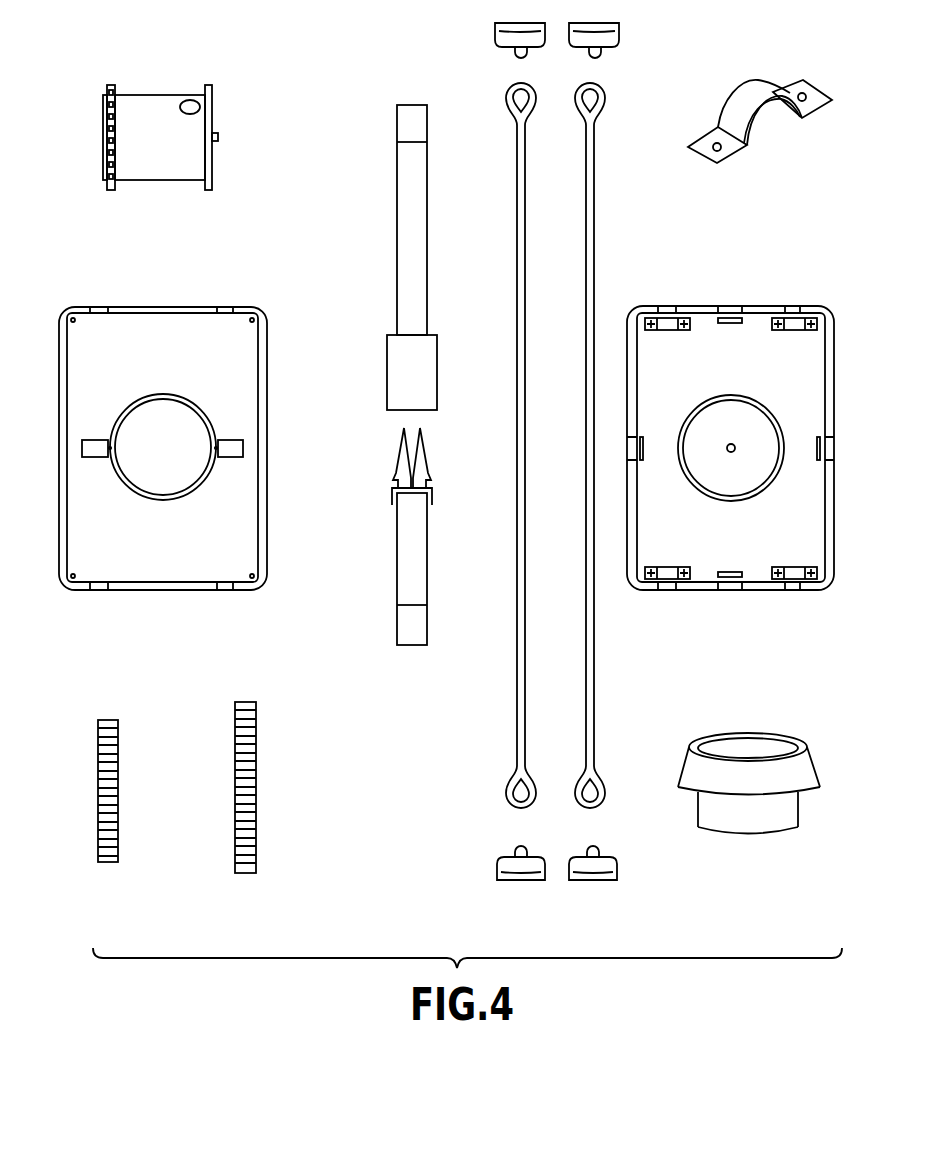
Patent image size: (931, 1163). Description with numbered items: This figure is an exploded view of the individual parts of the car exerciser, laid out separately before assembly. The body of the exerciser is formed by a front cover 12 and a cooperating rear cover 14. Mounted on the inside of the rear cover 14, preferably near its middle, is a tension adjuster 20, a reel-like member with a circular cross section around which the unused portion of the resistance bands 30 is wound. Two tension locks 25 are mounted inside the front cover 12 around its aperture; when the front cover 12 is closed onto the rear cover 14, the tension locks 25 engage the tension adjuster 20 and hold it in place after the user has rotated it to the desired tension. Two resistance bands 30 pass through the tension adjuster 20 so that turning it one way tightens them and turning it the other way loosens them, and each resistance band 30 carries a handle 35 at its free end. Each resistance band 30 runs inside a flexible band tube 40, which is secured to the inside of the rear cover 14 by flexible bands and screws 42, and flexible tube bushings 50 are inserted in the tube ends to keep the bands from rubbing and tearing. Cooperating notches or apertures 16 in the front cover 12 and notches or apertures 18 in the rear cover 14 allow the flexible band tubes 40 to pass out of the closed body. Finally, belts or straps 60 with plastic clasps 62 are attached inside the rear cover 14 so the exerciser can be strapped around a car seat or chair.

The front cover 12 is at (161, 448).
The rear cover 14 is at (730, 451).
The notches or apertures 16 is at (98, 307).
The notches or apertures 18 is at (667, 306).
The tension adjuster 20 is at (146, 95).
The tension locks 25 is at (85, 441).
The resistance bands 30 is at (517, 672).
The handle 35 is at (495, 36).
The flexible band tube 40 is at (100, 770).
The flexible bands and screws 42 is at (742, 88).
The flexible tube bushings 50 is at (777, 737).
The belts or straps 60 is at (400, 292).
The clasps 62 is at (391, 360).